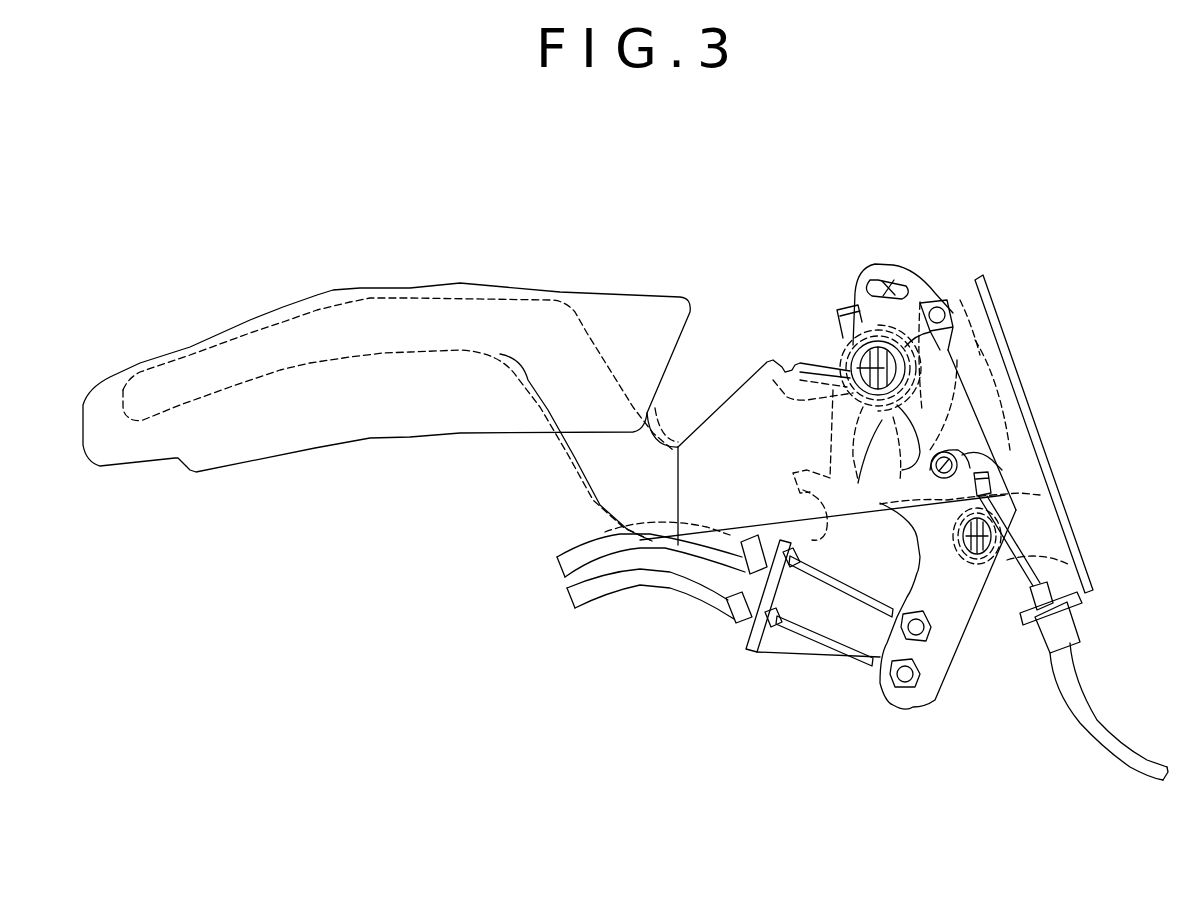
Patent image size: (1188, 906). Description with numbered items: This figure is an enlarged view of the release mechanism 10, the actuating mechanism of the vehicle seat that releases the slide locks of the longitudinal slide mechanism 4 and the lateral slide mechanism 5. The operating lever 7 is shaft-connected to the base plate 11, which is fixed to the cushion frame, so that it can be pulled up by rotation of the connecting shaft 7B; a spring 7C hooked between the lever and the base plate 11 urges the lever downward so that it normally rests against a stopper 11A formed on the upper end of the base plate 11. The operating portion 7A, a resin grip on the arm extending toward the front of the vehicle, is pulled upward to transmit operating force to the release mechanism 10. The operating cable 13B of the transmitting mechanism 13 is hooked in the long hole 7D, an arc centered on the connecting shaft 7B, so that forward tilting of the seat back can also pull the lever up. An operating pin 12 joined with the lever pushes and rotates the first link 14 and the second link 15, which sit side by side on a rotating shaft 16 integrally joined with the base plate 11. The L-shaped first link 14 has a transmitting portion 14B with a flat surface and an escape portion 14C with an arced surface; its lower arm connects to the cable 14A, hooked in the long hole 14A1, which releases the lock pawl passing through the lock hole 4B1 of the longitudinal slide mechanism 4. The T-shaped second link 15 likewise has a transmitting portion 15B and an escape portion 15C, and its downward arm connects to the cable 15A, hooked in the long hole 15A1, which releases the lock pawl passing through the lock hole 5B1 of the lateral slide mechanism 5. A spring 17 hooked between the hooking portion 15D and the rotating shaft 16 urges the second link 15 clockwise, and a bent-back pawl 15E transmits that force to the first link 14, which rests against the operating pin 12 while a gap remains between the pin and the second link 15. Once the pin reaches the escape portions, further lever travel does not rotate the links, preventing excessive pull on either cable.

The operating lever 7 is at (602, 320).
The operating portion 7A is at (368, 320).
The connecting shaft 7B is at (860, 367).
The spring 7C is at (767, 373).
The long hole 7D is at (887, 282).
The release mechanism 10 is at (1026, 217).
The base plate 11 is at (1002, 385).
The stopper 11A is at (845, 303).
The operating pin 12 is at (957, 460).
The operating cable 13B is at (1064, 439).
The transmitting mechanism 13 is at (992, 460).
The first link 14 is at (964, 624).
The cable 14A is at (725, 668).
The lock hole 4B1 is at (725, 668).
The longitudinal slide mechanism 4 is at (820, 580).
The long hole 14A1 is at (914, 685).
The transmitting portion 14B is at (1007, 353).
The escape portion 14C is at (993, 322).
The second link 15 is at (893, 570).
The cable 15A is at (737, 664).
The lock hole 5B1 is at (737, 664).
The lateral slide mechanism 5 is at (817, 615).
The long hole 15A1 is at (935, 645).
The transmitting portion 15B is at (1040, 495).
The escape portion 15C is at (906, 300).
The hooking portion 15D is at (991, 477).
The pawl 15E is at (950, 650).
The rotating shaft 16 is at (990, 548).
The spring 17 is at (1075, 575).